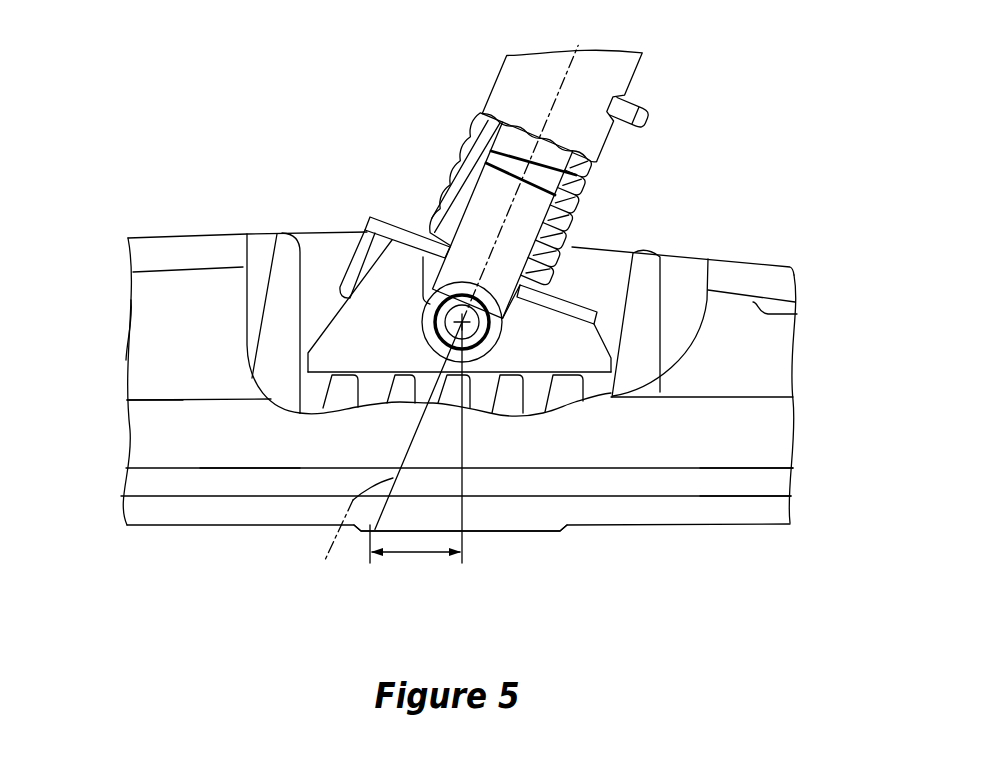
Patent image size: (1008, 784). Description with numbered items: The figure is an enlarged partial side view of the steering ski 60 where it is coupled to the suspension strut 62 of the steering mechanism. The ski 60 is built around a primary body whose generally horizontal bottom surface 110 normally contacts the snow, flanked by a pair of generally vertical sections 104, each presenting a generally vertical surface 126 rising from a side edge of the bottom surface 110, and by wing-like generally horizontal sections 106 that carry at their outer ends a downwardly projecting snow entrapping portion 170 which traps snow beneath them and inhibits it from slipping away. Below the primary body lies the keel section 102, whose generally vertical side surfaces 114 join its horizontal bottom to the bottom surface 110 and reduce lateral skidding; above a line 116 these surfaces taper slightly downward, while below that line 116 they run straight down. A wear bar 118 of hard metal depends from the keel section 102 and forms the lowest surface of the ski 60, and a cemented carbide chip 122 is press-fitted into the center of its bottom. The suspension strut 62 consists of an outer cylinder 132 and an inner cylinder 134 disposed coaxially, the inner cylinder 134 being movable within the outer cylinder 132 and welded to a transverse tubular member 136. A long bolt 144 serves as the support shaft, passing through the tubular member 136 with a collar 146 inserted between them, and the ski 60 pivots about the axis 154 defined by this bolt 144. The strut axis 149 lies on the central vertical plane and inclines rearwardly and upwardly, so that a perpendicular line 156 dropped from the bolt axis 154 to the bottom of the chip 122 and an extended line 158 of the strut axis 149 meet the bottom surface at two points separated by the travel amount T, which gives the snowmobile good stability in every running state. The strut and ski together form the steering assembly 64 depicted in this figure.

The ski 60 is at (754, 245).
The suspension strut 62 is at (484, 84).
The cutting tool assembly 64 is at (385, 80).
The keel section 102 is at (644, 452).
The generally vertical section 104 is at (146, 320).
The generally horizontal section 106 is at (206, 250).
The bottom surface 110 is at (183, 400).
The generally vertical side surface 114 is at (293, 448).
The line 116 is at (757, 466).
The wear bar 118 is at (732, 510).
The cemented carbide chip 122 is at (523, 533).
The generally vertical surface 126 is at (150, 362).
The outer cylinder 132 is at (463, 163).
The inner cylinder 134 is at (517, 237).
The transverse tubular member 136 is at (478, 344).
The bolt 144 is at (448, 334).
The collar 146 is at (482, 331).
The axis of the strut 149 is at (572, 68).
The axis 154 is at (431, 299).
The perpendicular line 156 is at (463, 481).
The extended line 158 is at (382, 461).
The snow entrapping portion 170 is at (797, 317).